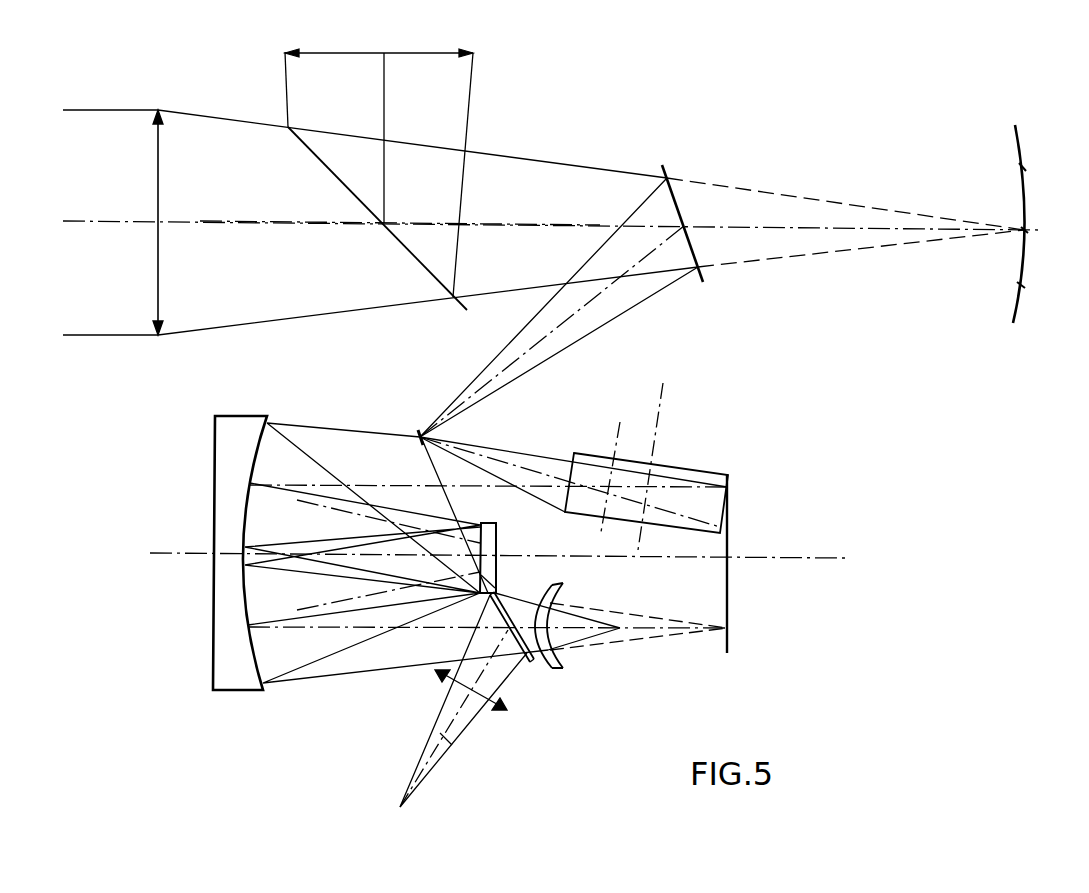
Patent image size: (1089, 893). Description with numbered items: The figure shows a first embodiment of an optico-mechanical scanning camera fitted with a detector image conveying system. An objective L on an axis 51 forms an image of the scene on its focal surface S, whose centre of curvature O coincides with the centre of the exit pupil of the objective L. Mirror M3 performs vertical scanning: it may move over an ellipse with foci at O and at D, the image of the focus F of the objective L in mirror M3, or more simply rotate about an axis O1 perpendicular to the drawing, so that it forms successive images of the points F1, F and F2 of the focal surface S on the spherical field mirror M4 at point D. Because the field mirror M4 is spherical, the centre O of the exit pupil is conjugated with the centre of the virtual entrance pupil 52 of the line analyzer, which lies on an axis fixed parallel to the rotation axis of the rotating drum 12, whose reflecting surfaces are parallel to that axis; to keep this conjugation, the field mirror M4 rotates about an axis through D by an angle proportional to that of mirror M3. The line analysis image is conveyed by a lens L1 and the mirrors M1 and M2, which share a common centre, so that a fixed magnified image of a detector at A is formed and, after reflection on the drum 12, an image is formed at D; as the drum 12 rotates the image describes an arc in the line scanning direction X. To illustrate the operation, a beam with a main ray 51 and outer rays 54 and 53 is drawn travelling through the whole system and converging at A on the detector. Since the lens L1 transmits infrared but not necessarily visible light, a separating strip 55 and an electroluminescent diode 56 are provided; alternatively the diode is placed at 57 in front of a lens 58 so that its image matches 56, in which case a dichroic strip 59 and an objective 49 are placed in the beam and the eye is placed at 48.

The rotating drum 12 is at (728, 505).
The eye position 48 is at (374, 38).
The objective 49 is at (473, 53).
The main ray 51 is at (294, 222).
The virtual entrance pupil of the line analyzer 52 is at (607, 458).
The outer ray 53 is at (344, 312).
The outer ray 54 is at (214, 117).
The separating strip 55 is at (532, 665).
The electroluminescent diode 56 is at (400, 806).
The diode position in front of lens 57 is at (452, 742).
The lens 58 is at (500, 710).
The dichroic strip 59 is at (280, 120).
The mirror M1 is at (250, 647).
The mirror M2 is at (493, 587).
The vertical scanning mirror M3 is at (666, 171).
The field mirror M4 is at (417, 436).
The lens L1 is at (552, 642).
The focal surface S is at (1015, 143).
The focus of the objective F is at (1024, 232).
The point of the focal surface F1 is at (1022, 167).
The point of the focal surface F2 is at (1021, 285).
The objective L is at (156, 292).
The centre of curvature of the focal surface O is at (160, 220).
The rotation axis of mirror M3 O1 is at (701, 214).
The line scanning direction X is at (506, 543).
The image point of focus F on field mirror D is at (428, 437).
The detector position A is at (620, 632).